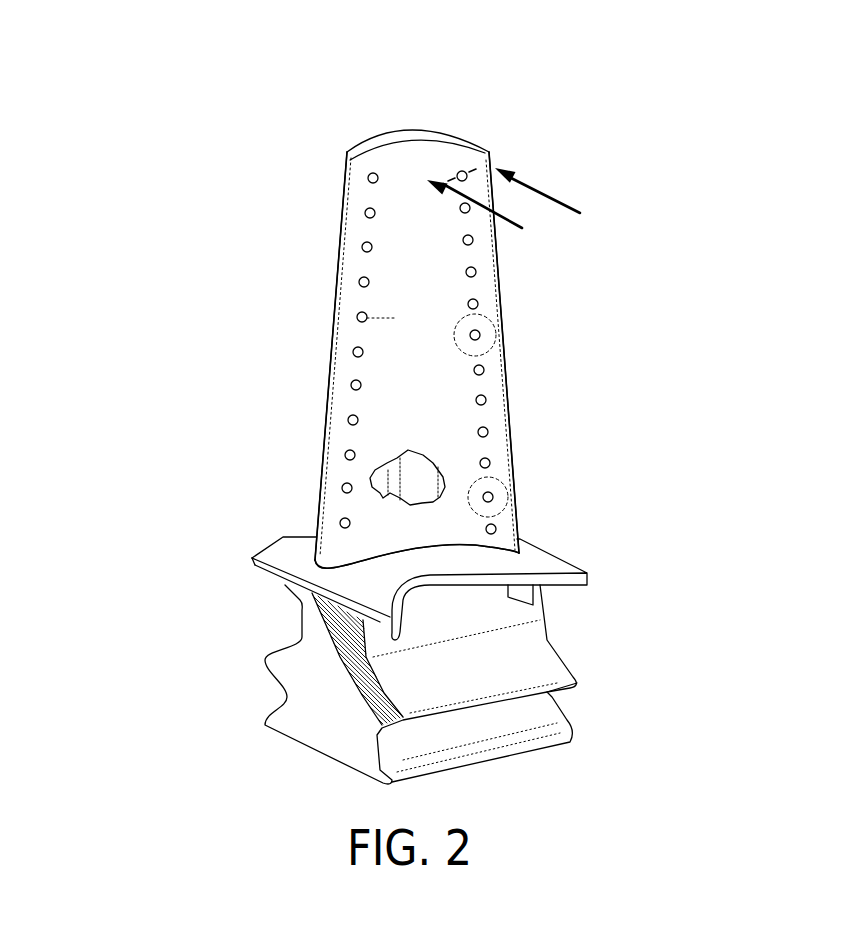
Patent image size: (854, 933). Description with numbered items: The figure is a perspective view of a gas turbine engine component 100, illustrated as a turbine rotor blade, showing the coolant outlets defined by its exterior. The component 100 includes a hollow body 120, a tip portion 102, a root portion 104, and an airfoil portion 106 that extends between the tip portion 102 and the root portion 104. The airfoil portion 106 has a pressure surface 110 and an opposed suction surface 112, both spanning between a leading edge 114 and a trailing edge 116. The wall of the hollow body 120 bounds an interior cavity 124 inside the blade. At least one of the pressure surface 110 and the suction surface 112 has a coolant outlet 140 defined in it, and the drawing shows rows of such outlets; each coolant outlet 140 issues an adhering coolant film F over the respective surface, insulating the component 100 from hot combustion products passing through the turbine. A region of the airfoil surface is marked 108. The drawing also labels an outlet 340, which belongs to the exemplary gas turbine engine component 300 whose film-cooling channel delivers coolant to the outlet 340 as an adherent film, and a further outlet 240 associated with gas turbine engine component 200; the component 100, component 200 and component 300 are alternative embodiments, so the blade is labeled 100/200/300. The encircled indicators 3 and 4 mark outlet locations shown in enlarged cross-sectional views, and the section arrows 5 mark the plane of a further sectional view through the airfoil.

The gas turbine engine component 100 is at (396, 453).
The gas turbine engine component 200 is at (407, 398).
The gas turbine engine component 300 is at (407, 398).
The tip portion 102 is at (256, 203).
The root portion 104 is at (244, 633).
The airfoil portion 106 is at (242, 403).
The pressure side surface 108 is at (440, 416).
The pressure surface 110 is at (418, 276).
The suction surface 112 is at (423, 128).
The leading edge 114 is at (331, 370).
The trailing edge 116 is at (509, 425).
The hollow body 120 is at (470, 606).
The interior cavity 124 is at (374, 473).
The coolant outlet 140 is at (361, 315).
The cooling hole (second embodiment) 240 is at (494, 497).
The outlet 340 is at (470, 170).
The detail view 3 indicator 3 is at (490, 326).
The detail view 4 indicator 4 is at (502, 483).
The section 5-5 indicator 5 is at (512, 216).
The coolant film F is at (397, 318).